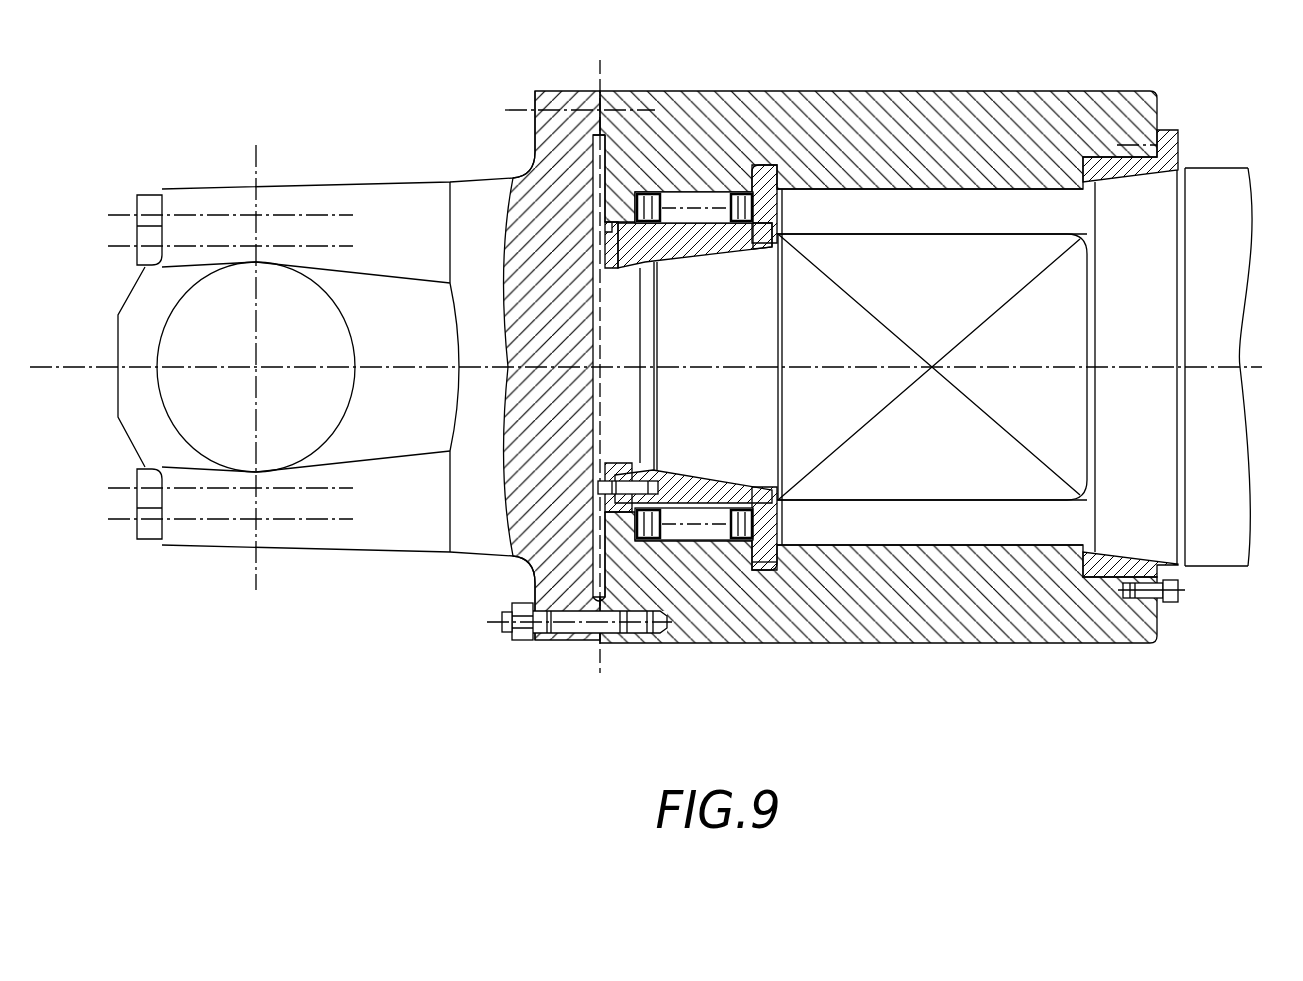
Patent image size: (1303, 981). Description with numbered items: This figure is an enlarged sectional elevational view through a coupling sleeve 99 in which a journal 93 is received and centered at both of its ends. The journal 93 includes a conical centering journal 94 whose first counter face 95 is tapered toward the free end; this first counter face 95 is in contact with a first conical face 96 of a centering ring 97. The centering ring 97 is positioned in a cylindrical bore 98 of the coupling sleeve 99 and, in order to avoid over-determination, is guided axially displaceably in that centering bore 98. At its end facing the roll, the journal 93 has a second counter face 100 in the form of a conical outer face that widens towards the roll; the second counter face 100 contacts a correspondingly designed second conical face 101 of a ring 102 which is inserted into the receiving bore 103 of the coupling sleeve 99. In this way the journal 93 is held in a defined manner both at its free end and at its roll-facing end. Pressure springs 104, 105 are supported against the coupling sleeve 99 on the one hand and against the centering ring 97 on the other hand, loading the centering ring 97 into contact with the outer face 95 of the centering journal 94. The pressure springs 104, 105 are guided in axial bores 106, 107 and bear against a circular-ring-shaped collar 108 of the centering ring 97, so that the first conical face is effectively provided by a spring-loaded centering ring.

The journal 93 is at (968, 527).
The conical centering journal 94 is at (728, 444).
The first counter face 95 is at (737, 240).
The first conical face 96 is at (676, 243).
The centering ring 97 is at (706, 232).
The cylindrical bore 98 is at (641, 232).
The coupling sleeve 99 is at (915, 115).
The second counter face 100 is at (1180, 141).
The second conical face 101 is at (1115, 183).
The ring 102 is at (1118, 170).
The receiving bore 103 is at (977, 193).
The pressure spring 104 is at (760, 528).
The pressure spring 105 is at (755, 205).
The axial bore 106 is at (693, 537).
The axial bore 107 is at (650, 200).
The circular-ring-shaped collar 108 is at (770, 573).